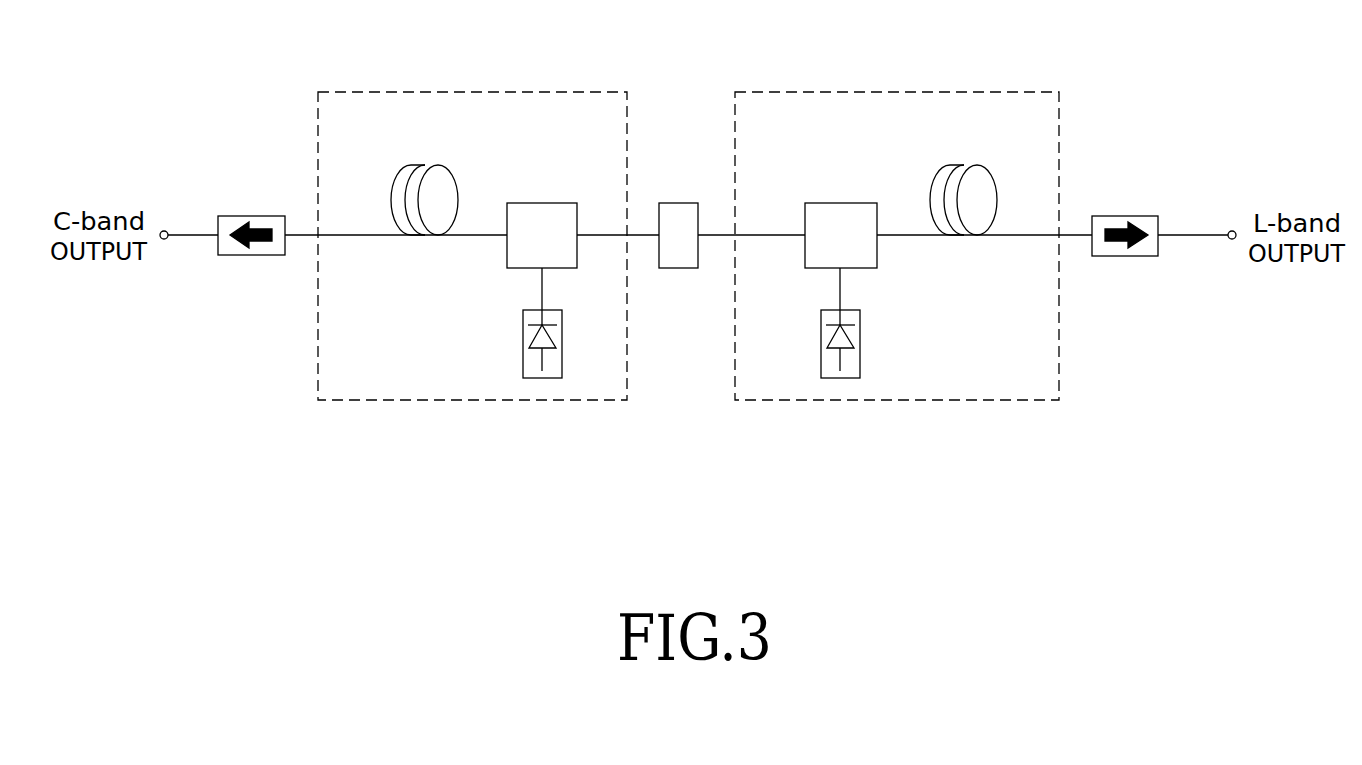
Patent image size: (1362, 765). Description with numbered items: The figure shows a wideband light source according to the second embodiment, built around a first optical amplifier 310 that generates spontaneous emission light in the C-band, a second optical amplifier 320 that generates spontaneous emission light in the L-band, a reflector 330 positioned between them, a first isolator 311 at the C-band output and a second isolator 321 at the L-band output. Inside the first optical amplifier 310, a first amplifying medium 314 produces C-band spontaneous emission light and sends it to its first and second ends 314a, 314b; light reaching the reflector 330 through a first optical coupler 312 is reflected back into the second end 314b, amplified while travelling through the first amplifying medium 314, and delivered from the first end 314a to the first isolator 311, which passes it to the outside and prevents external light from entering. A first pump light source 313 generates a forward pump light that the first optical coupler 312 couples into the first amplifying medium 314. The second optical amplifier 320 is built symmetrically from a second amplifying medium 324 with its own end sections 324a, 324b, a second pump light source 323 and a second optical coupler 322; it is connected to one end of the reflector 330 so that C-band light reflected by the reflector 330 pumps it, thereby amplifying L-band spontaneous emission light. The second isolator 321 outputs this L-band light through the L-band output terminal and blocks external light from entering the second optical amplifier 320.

The first optical amplifier 310 is at (434, 92).
The first isolator 311 is at (249, 215).
The first optical coupler 312 is at (540, 203).
The first pump light source 313 is at (523, 345).
The first amplifying medium 314 is at (419, 248).
The first end of the first amplifying medium 314a is at (413, 240).
The second end of the first amplifying medium 314b is at (502, 240).
The second optical amplifier 320 is at (935, 92).
The second isolator 321 is at (1123, 217).
The second optical coupler 322 is at (836, 203).
The second pump light source 323 is at (821, 345).
The second amplifying medium 324 is at (966, 252).
The first end of the second amplifying medium 324a is at (960, 240).
The second end of the second amplifying medium 324b is at (1047, 240).
The reflector 330 is at (674, 203).